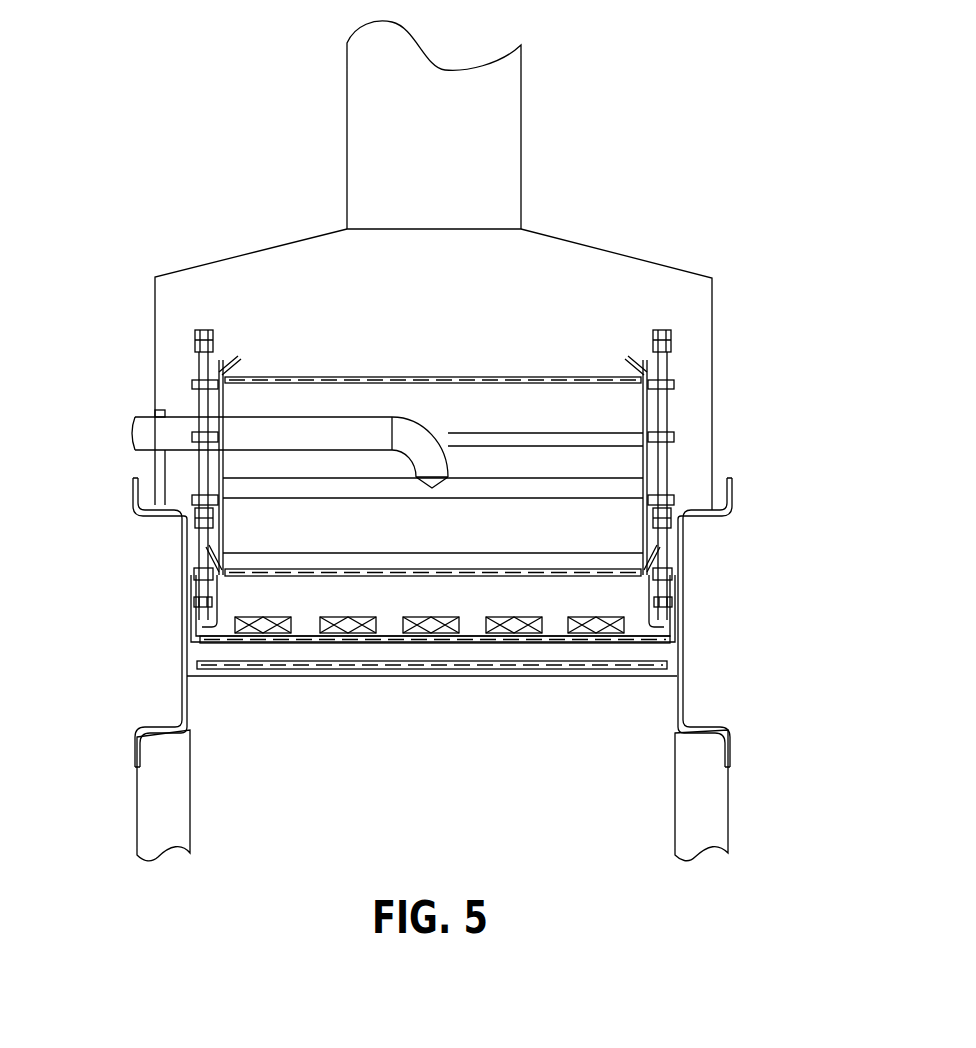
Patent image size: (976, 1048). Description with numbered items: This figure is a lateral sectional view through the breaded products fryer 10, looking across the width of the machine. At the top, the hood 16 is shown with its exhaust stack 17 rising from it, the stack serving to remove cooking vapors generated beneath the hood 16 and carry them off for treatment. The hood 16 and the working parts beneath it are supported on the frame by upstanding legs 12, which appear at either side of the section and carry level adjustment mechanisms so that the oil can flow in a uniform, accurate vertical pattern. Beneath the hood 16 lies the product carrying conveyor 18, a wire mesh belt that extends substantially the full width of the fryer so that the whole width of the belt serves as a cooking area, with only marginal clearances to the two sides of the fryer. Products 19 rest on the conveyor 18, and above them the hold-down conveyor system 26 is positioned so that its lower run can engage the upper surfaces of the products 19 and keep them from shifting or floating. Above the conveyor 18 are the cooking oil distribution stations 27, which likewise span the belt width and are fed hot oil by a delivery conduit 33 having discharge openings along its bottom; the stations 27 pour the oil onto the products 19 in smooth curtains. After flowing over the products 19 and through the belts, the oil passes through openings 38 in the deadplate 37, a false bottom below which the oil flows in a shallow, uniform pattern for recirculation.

The breaded products fryer 10 is at (637, 212).
The upstanding legs 12 is at (190, 797).
The hood 16 is at (712, 287).
The exhaust stack 17 is at (521, 92).
The product carrying conveyor 18 is at (208, 626).
The products 19 is at (624, 623).
The hold-down conveyor system 26 is at (630, 370).
The cooking oil distribution stations 27 is at (255, 416).
The delivery conduit 33 is at (625, 487).
The deadplate 37 is at (573, 663).
The openings 38 is at (578, 643).